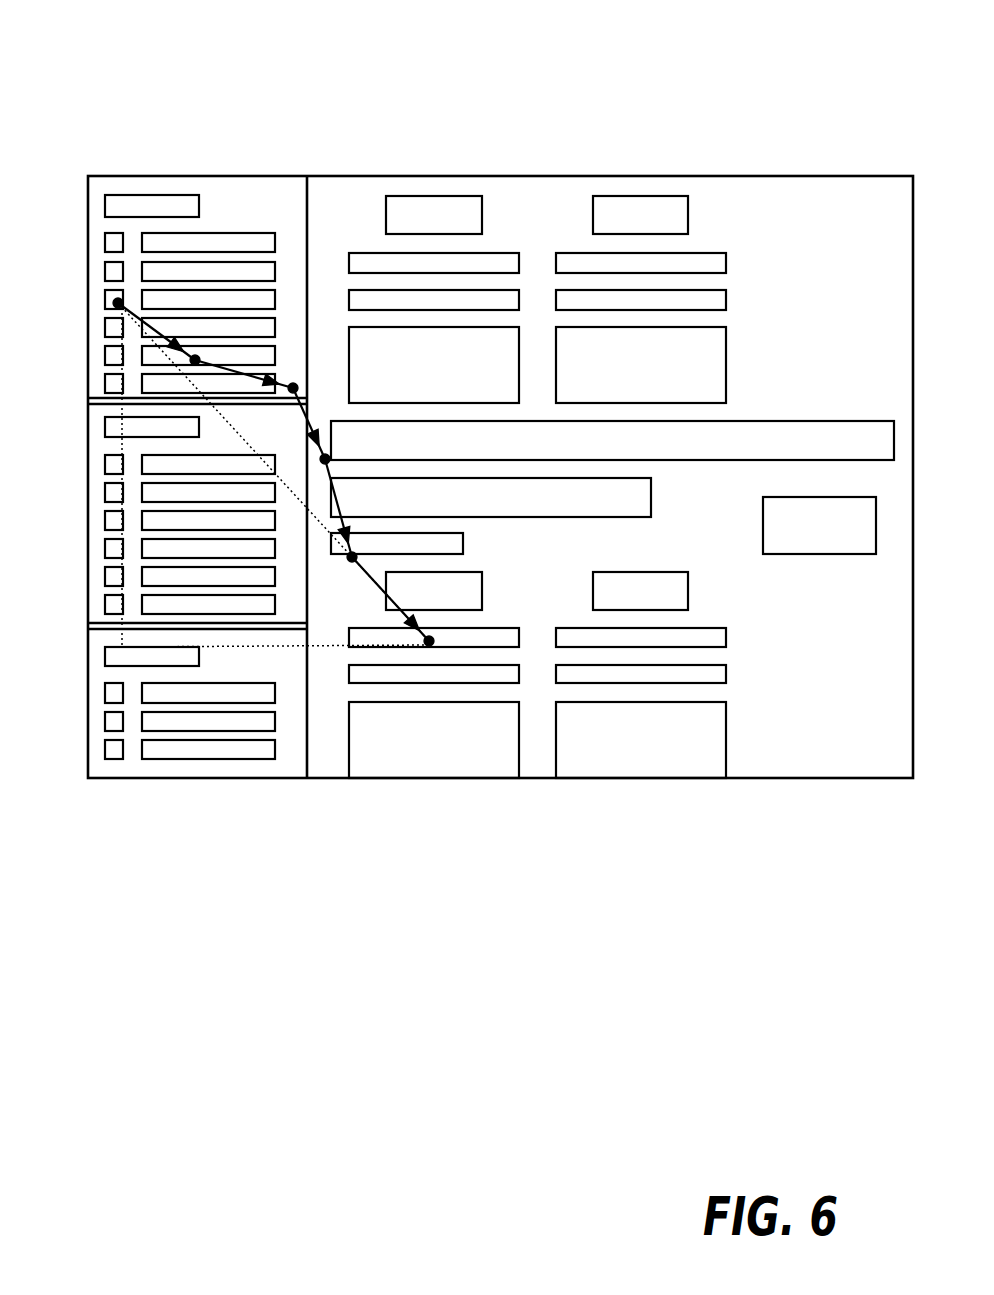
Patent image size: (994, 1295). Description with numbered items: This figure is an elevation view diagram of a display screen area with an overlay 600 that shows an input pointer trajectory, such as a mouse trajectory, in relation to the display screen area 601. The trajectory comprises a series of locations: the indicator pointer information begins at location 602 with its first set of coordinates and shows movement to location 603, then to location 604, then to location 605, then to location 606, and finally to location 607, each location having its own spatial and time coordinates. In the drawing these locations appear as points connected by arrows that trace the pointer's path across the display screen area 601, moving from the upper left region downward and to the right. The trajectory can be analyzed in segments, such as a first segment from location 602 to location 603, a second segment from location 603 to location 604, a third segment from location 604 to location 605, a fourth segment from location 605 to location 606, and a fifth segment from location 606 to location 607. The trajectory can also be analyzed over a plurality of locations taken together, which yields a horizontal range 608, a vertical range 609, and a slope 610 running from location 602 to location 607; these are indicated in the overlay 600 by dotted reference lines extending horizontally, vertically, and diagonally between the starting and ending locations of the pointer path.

The overlay 600 is at (812, 108).
The display screen area 601 is at (449, 176).
The location 602 is at (118, 309).
The location 603 is at (195, 362).
The location 604 is at (293, 390).
The location 605 is at (325, 459).
The location 606 is at (352, 557).
The location 607 is at (429, 641).
The horizontal range 608 is at (332, 645).
The vertical range 609 is at (123, 440).
The slope 610 is at (297, 499).